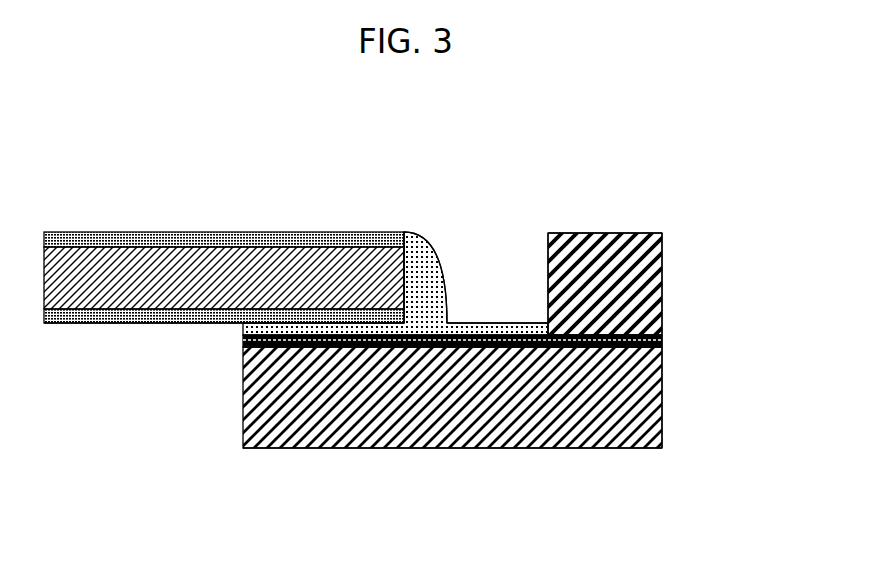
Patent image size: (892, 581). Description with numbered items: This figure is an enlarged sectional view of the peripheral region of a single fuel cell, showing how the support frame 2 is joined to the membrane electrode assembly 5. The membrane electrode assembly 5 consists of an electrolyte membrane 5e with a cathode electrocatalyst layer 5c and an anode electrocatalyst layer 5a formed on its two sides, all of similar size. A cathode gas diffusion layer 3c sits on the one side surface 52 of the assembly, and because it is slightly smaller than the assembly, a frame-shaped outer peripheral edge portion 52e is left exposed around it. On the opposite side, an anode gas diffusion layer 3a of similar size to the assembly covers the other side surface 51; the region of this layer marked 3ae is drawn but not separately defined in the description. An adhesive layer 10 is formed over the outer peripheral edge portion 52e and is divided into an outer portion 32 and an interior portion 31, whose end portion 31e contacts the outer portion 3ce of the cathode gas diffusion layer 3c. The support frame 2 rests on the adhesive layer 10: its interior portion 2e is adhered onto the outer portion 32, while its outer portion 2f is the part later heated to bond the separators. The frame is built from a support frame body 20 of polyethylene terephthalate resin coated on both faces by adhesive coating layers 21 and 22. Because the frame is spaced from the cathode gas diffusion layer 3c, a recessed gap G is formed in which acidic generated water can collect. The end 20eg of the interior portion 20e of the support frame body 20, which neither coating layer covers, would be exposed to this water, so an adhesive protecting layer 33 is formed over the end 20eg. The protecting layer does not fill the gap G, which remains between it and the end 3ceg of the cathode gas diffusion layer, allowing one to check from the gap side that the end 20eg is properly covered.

The support frame 2 is at (224, 209).
The adhesive coating layer 21 is at (168, 240).
The support frame body 20 is at (197, 270).
The adhesive coating layer 22 is at (220, 320).
The interior portion 2e is at (337, 233).
The outer portion 2f is at (83, 324).
The interior portion 20e is at (372, 250).
The end 20eg is at (427, 258).
The adhesive protecting layer 33 is at (441, 262).
The gap G is at (474, 278).
The end 3ceg is at (547, 262).
The outer portion 3ce is at (562, 240).
The cathode gas diffusion layer 3c is at (650, 260).
The one side surface 52 is at (592, 334).
The outer peripheral edge portion 52e is at (497, 331).
The membrane electrode assembly 5 is at (737, 309).
The cathode electrocatalyst layer 5c is at (667, 334).
The electrolyte membrane 5e is at (667, 340).
The anode electrocatalyst layer 5a is at (667, 348).
The adhesive layer 10 is at (452, 443).
The outer portion 32 is at (337, 348).
The interior portion 31 is at (477, 350).
The end portion 31e is at (538, 348).
The other side surface 51 is at (615, 348).
The end face of substrate 3ae is at (292, 430).
The anode gas diffusion layer 3a is at (653, 427).